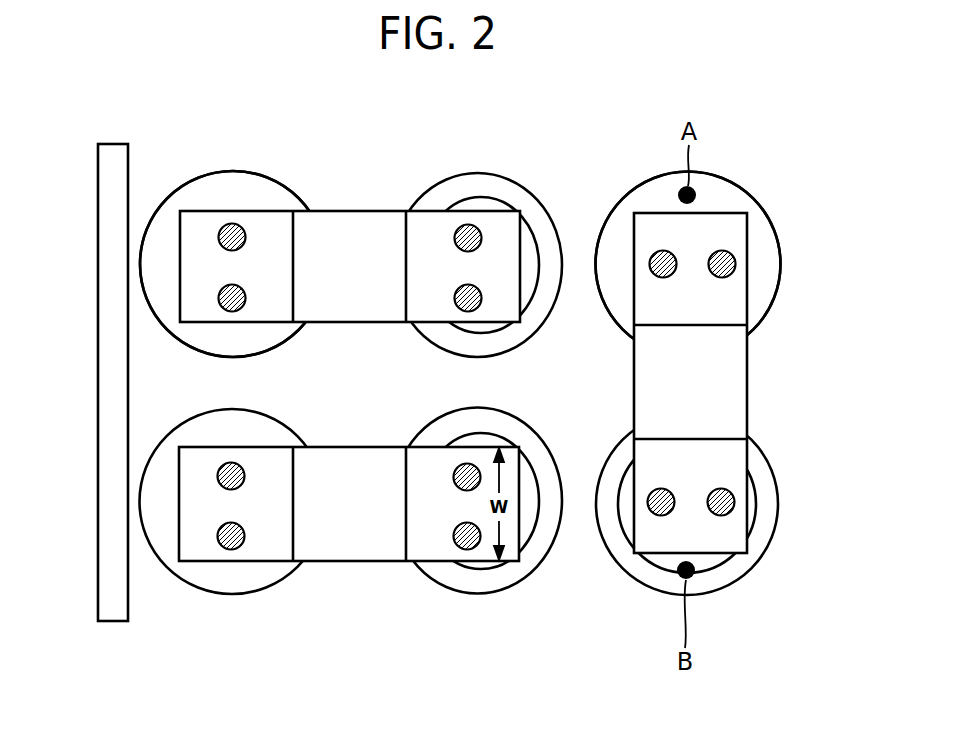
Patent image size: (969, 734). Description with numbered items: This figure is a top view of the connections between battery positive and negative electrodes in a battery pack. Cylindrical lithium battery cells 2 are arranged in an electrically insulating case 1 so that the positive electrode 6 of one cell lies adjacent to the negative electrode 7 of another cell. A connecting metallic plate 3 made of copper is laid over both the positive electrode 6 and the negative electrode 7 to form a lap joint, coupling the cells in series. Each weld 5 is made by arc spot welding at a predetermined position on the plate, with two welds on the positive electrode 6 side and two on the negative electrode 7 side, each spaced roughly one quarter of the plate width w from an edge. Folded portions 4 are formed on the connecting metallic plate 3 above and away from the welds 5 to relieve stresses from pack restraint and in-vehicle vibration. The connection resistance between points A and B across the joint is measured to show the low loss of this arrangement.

The electrically insulating case 1 is at (106, 170).
The battery cell 2 is at (285, 190).
The connecting metallic plate 3 is at (352, 230).
The folded portion 4 is at (707, 438).
The weld 5 is at (232, 228).
The positive electrode 6 is at (492, 207).
The negative electrode 7 is at (200, 195).